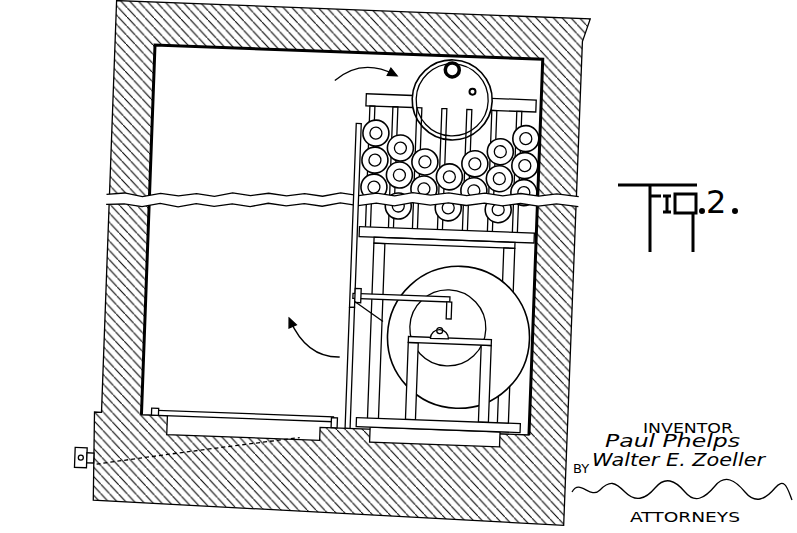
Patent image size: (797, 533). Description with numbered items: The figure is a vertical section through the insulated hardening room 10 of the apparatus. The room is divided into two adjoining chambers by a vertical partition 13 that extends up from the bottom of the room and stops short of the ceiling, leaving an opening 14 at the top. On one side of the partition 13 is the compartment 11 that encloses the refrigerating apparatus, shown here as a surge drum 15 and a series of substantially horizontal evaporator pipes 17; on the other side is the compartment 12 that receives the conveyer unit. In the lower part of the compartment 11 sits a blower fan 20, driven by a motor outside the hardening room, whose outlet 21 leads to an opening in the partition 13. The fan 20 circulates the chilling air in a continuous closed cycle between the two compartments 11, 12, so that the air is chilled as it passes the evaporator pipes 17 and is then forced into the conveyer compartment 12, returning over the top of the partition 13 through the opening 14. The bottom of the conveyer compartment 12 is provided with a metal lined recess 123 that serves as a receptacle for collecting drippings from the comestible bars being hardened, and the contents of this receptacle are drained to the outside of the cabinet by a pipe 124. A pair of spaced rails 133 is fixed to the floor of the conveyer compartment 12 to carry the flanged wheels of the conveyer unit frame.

The insulated hardening room 10 is at (571, 85).
The compartment 11 is at (533, 70).
The compartment 12 is at (172, 105).
The vertical partition 13 is at (351, 259).
The opening 14 is at (362, 83).
The surge drum 15 is at (468, 83).
The evaporator pipes 17 is at (535, 172).
The blower fan 20 is at (511, 328).
The outlet 21 is at (353, 396).
The metal lined recess 123 is at (202, 426).
The rails 133 is at (157, 411).
The pipe 124 is at (75, 456).